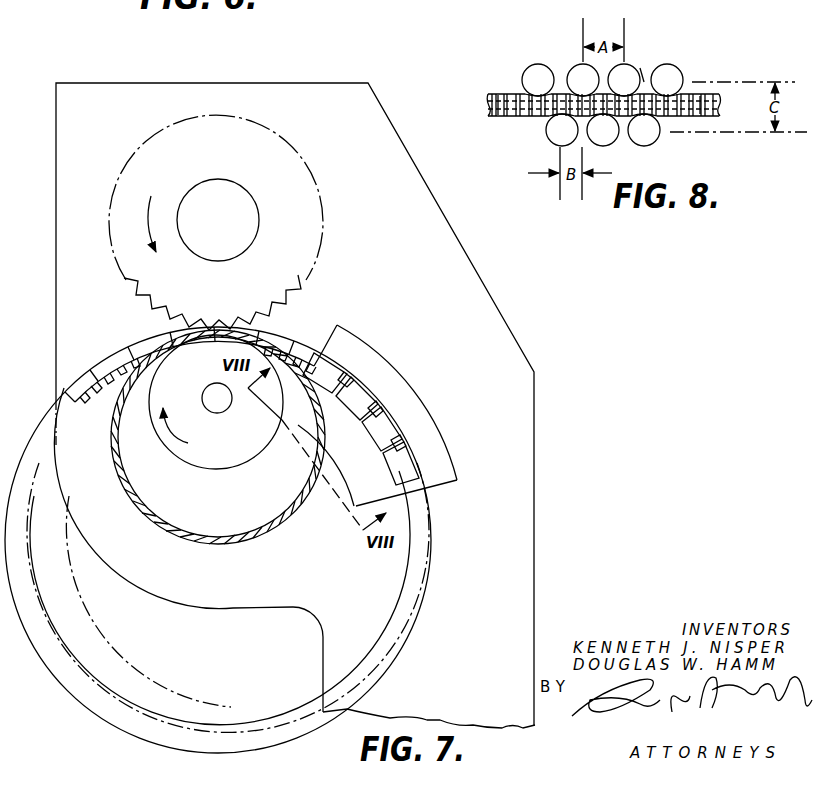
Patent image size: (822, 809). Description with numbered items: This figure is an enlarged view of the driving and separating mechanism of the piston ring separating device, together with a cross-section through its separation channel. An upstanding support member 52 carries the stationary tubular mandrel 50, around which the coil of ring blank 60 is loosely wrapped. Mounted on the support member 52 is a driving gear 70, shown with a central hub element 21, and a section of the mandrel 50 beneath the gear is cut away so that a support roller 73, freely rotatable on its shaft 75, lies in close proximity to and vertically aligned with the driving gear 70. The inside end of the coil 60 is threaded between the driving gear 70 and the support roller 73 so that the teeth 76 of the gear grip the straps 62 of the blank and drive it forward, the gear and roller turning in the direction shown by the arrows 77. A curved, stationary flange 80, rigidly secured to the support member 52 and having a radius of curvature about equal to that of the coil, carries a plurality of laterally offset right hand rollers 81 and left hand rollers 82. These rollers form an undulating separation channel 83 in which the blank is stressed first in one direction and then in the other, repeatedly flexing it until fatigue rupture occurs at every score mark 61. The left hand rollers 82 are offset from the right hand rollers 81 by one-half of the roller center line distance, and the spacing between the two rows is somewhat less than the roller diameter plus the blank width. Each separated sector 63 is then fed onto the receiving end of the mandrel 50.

In FIG. 7, the shaft 21 is at (218, 220).
In FIG. 7, the driving gear 70 is at (233, 222).
In FIG. 7, the teeth 76 is at (312, 290).
In FIG. 7, the arrows 77 is at (160, 257).
In FIG. 7, the coil of ring blank 60 is at (191, 360).
In FIG. 8, the coil of ring blank 60 is at (498, 112).
In FIG. 7, the score mark 61 is at (134, 351).
In FIG. 7, the stationary tubular mandrel 50 is at (284, 519).
In FIG. 7, the support roller 73 is at (245, 466).
In FIG. 7, the shaft 75 is at (203, 393).
In FIG. 7, the curved stationary flange 80 is at (366, 354).
In FIG. 7, the upstanding support member 52 is at (270, 418).
In FIG. 8, the right hand rollers 81 is at (574, 66).
In FIG. 8, the left hand rollers 82 is at (640, 140).
In FIG. 8, the separation channel 83 is at (646, 82).
In FIG. 8, the straps 62 is at (500, 92).
In FIG. 8, the sector 63 is at (705, 98).